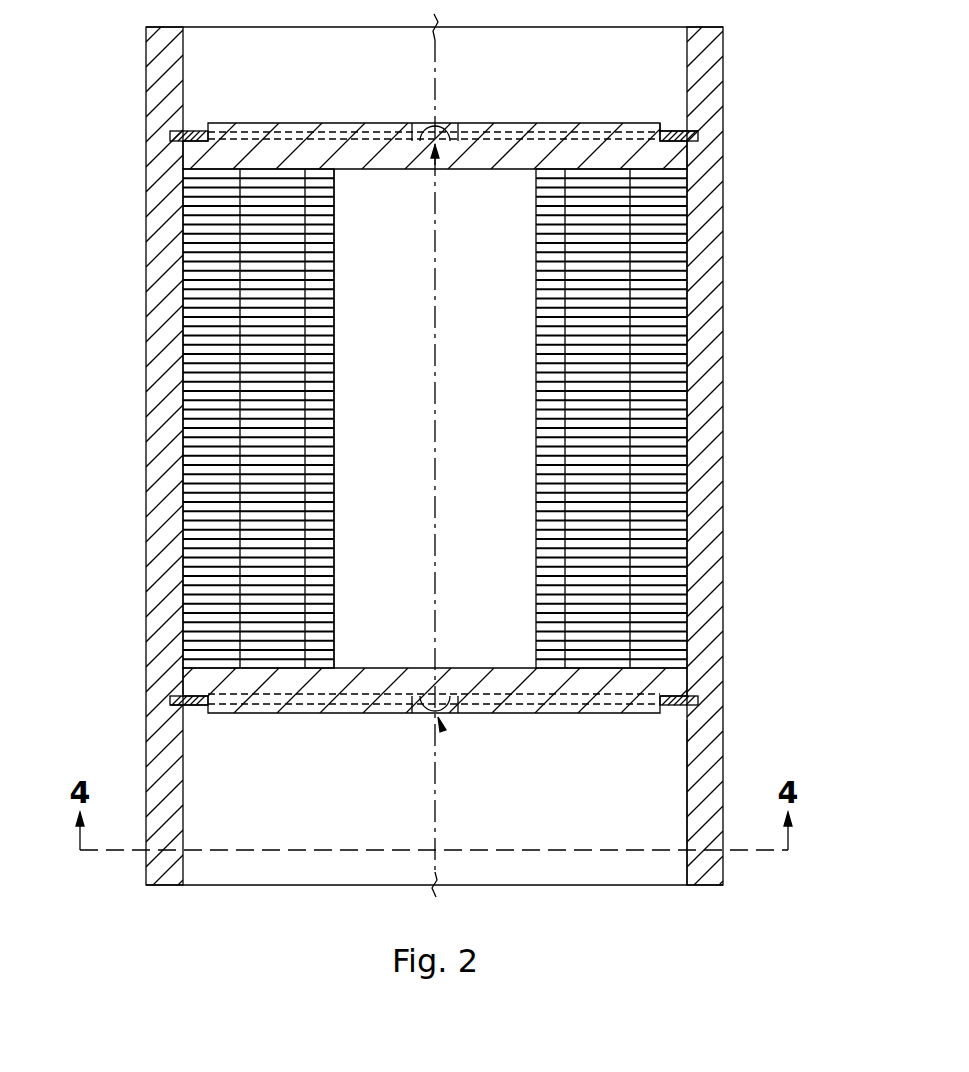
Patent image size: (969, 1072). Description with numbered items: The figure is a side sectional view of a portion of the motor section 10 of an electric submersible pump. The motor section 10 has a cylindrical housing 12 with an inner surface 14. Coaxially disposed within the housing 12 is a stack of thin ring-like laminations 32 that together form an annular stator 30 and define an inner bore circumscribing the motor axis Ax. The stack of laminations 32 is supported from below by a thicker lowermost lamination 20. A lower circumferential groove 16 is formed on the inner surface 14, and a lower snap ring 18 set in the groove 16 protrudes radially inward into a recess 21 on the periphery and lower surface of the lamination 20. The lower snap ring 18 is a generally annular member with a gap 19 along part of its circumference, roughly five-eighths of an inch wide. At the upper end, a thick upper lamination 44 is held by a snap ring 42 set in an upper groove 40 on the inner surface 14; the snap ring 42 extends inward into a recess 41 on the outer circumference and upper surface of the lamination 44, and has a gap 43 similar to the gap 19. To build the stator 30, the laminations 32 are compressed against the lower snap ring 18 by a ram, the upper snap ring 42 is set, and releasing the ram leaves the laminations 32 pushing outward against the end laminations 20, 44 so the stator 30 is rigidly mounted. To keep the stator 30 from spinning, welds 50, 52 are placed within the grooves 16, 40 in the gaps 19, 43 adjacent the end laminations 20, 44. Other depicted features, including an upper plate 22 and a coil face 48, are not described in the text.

The motor section 10 is at (486, 461).
The cylindrical housing 12 is at (710, 656).
The inner surface 14 is at (687, 808).
The lower circumferential groove 16 is at (203, 697).
The lower snap ring 18 is at (673, 707).
The gap 19 is at (443, 728).
The lowermost lamination 20 is at (437, 721).
The recess 21 is at (205, 707).
The upper end plate 22 is at (440, 143).
The stator 30 is at (434, 418).
The laminations 32 is at (316, 283).
The groove 40 is at (700, 137).
The recess 41 is at (203, 124).
The snap ring 42 is at (676, 130).
The gap 43 is at (436, 160).
The upper lamination 44 is at (652, 153).
The coil inner surface 48 is at (335, 201).
The weld 50 is at (429, 712).
The weld 52 is at (432, 135).
The motor axis Ax is at (435, 797).